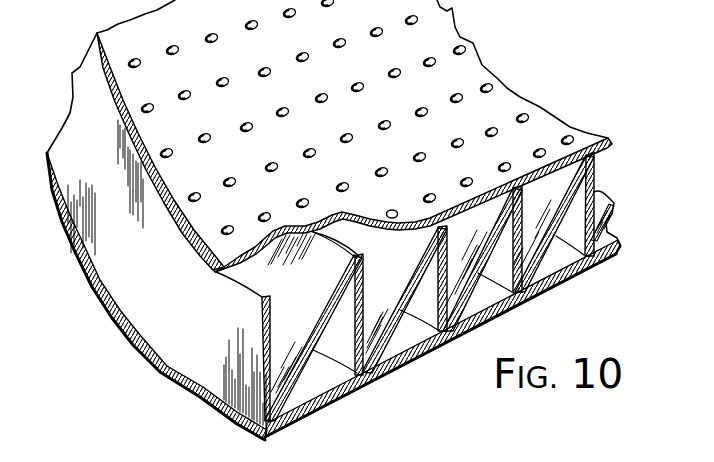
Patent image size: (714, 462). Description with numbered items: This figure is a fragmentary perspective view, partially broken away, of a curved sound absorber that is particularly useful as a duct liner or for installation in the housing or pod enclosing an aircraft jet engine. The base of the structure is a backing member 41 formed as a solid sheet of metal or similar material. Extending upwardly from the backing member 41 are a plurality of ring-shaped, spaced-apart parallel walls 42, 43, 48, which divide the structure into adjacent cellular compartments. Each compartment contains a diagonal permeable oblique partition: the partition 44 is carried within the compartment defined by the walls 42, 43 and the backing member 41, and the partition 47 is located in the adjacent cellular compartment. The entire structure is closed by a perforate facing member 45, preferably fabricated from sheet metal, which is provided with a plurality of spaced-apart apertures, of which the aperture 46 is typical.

The backing member 41 is at (421, 362).
The wall 42 is at (220, 341).
The wall 43 is at (358, 351).
The partition 44 is at (320, 302).
The perforate facing member 45 is at (272, 104).
The aperture 46 is at (199, 191).
The partition 47 is at (406, 268).
The wall 48 is at (438, 310).